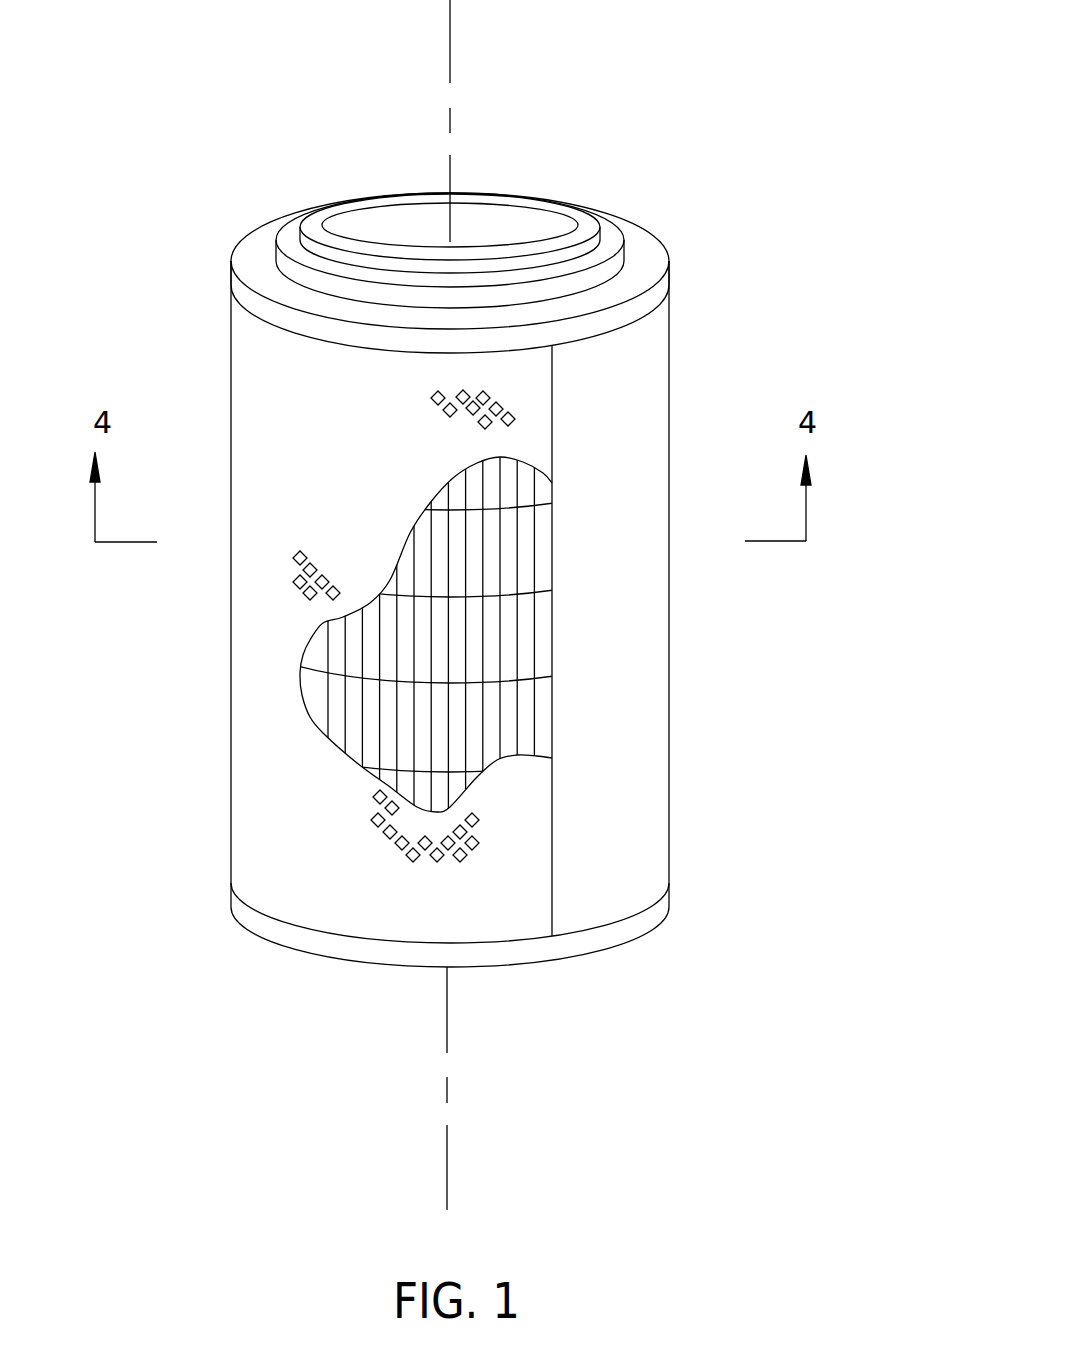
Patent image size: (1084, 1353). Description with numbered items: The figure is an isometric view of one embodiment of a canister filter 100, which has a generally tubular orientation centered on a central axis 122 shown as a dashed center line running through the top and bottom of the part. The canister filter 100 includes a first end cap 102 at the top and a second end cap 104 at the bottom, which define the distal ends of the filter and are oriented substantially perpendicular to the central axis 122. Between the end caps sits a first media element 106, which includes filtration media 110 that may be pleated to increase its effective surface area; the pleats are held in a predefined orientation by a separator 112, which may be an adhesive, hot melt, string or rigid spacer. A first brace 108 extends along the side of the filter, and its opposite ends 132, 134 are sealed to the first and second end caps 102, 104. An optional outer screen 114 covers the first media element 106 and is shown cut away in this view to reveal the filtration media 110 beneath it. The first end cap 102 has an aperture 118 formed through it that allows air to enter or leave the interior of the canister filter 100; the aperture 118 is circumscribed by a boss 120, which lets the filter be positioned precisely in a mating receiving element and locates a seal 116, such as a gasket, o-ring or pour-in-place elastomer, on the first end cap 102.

The canister filter 100 is at (862, 248).
The first end cap 102 is at (630, 216).
The second end cap 104 is at (598, 946).
The first media element 106 is at (462, 613).
The first brace 108 is at (643, 370).
The filtration media 110 is at (457, 670).
The separator 112 is at (356, 680).
The outer screen 114 is at (248, 398).
The seal 116 is at (283, 250).
The aperture 118 is at (431, 207).
The boss 120 is at (550, 197).
The central axis 122 is at (447, 1017).
The first end of first brace 132 is at (605, 335).
The second end of first brace 134 is at (630, 913).